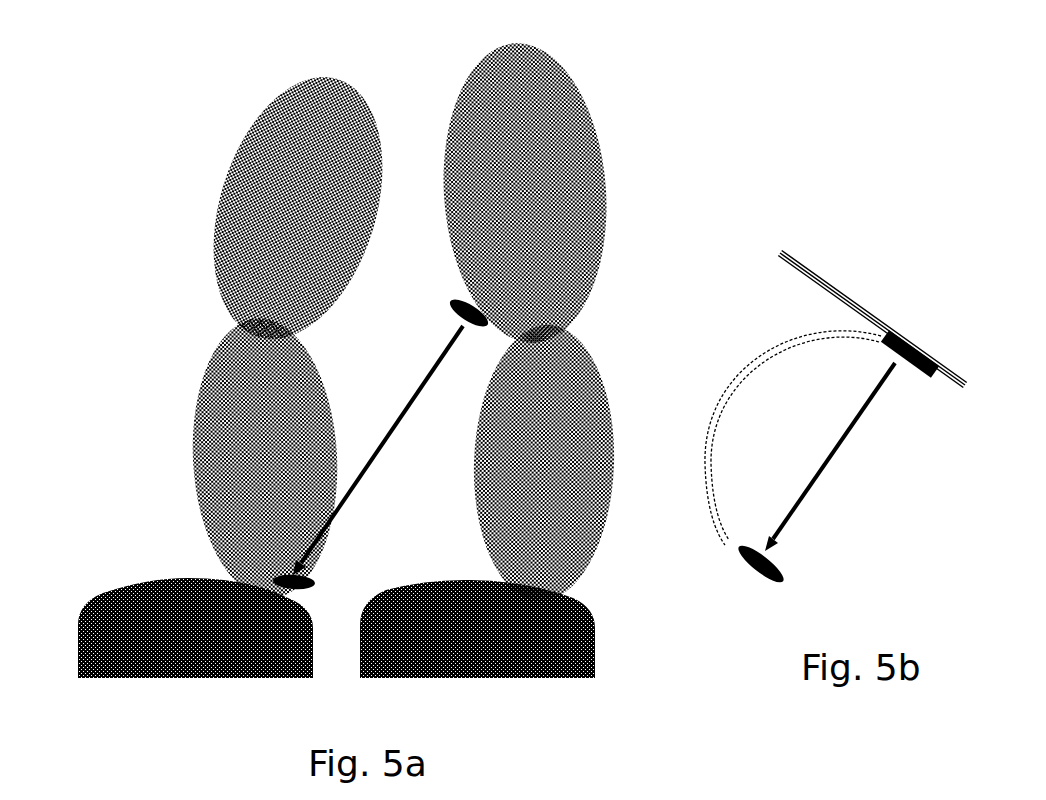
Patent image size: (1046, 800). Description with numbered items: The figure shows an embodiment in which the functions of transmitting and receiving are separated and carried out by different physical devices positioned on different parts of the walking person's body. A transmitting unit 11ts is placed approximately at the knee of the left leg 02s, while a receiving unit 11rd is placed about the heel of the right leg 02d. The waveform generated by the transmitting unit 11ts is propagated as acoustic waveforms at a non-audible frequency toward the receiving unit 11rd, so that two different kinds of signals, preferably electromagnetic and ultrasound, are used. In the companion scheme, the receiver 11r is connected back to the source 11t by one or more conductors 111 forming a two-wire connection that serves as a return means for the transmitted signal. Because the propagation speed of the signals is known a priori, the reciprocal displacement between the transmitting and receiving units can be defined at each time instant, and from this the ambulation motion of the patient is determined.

In FIG. 5A, the right leg 02d is at (150, 88).
In FIG. 5A, the left leg 02s is at (615, 92).
In FIG. 5A, the transmitting unit 11ts is at (455, 292).
In FIG. 5A, the receiving unit 11rd is at (303, 572).
In FIG. 5B, the conductors 111 is at (772, 360).
In FIG. 5B, the transmitting unit 11t is at (897, 373).
In FIG. 5B, the receiving unit 11r is at (777, 553).